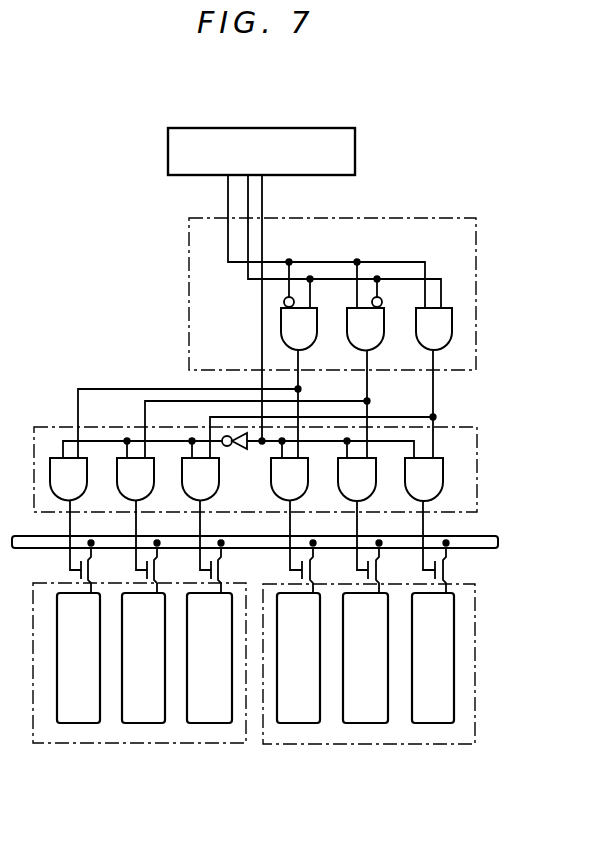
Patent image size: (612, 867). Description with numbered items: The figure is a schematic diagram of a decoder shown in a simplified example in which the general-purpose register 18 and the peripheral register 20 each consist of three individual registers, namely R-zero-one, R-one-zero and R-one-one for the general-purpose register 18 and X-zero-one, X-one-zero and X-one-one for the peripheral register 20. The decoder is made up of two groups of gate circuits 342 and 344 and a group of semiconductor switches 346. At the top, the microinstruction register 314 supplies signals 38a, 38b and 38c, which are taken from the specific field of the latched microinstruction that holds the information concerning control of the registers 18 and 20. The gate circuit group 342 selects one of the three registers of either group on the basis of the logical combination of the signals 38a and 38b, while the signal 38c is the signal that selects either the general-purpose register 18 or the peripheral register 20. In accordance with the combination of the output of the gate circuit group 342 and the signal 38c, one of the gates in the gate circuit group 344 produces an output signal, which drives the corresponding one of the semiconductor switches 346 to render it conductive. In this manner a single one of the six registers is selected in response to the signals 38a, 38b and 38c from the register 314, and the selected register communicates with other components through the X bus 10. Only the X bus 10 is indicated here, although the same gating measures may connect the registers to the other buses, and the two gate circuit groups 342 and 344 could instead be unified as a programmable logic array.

The microinstruction register 314 is at (355, 152).
The signal 38a is at (227, 185).
The signal 38b is at (250, 207).
The signal 38c is at (263, 200).
The gate circuit group 342 is at (476, 240).
The gate circuit group 344 is at (477, 455).
The X bus 10 is at (498, 543).
The semiconductor switches 346 is at (458, 570).
The peripheral register 20 is at (98, 743).
The general-purpose register 18 is at (338, 744).